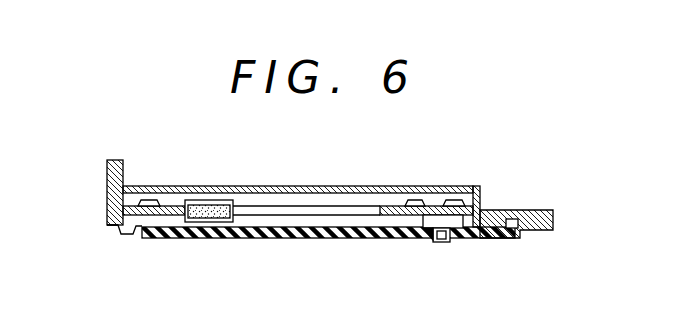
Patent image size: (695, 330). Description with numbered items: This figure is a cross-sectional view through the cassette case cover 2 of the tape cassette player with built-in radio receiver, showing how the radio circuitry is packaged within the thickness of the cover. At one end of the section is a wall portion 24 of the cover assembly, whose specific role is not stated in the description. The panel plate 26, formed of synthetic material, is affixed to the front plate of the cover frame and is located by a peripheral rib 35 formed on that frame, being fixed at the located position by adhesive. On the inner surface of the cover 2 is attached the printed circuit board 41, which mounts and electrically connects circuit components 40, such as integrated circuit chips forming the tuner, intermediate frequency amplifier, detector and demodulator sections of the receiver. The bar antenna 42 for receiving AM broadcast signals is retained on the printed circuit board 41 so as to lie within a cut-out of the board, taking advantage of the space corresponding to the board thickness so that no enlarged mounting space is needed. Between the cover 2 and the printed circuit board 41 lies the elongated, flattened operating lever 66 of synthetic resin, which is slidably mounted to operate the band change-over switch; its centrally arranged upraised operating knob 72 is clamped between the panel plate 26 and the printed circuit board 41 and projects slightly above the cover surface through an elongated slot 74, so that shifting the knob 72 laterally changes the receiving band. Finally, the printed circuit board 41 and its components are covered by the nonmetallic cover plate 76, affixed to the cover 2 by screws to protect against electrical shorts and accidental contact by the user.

The cover 2 is at (120, 232).
The end wall block 24 is at (110, 185).
The panel plate 26 is at (276, 238).
The peripheral rib 35 is at (131, 236).
The circuit components 40 is at (448, 200).
The printed circuit board 41 is at (389, 206).
The bar antenna 42 is at (207, 210).
The operating lever 66 is at (427, 240).
The operating knob 72 is at (445, 243).
The elongated slot 74 is at (455, 242).
The cover plate 76 is at (268, 188).